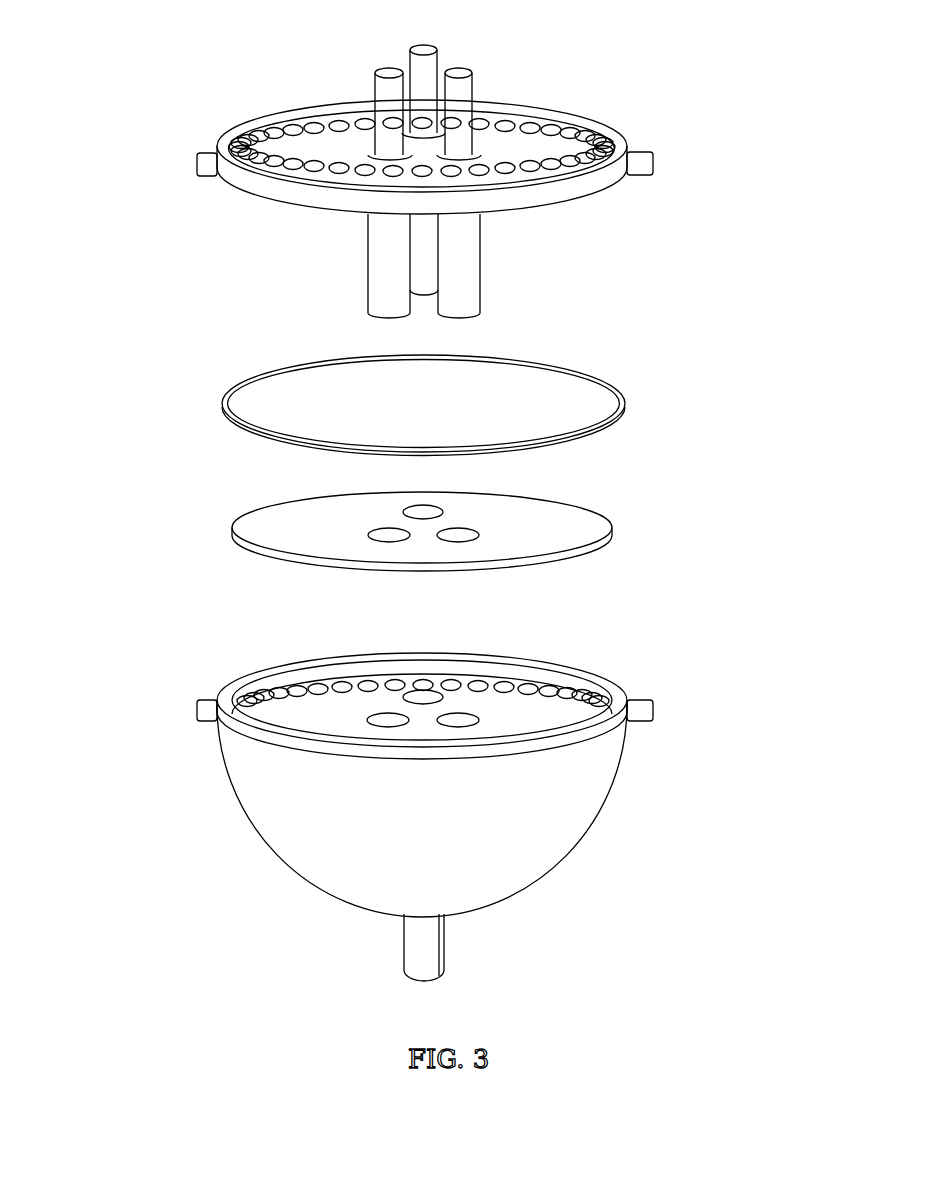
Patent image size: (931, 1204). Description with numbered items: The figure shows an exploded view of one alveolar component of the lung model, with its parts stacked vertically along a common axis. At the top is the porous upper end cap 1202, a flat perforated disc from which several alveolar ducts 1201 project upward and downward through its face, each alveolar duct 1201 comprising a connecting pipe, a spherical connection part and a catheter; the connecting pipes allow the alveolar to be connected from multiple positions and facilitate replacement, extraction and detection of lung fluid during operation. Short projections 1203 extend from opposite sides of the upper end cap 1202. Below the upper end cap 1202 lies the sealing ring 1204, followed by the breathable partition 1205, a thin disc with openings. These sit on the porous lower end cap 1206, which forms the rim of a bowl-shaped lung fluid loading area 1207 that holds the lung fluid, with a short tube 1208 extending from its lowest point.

The alveolar duct 1201 is at (432, 50).
The porous upper end cap 1202 is at (625, 143).
The side lugs 1203 is at (197, 155).
The sealing ring 1204 is at (615, 392).
The breathable partition 1205 is at (598, 512).
The porous lower end cap 1206 is at (626, 693).
The lung fluid loading area 1207 is at (605, 806).
The outlet spout 1208 is at (444, 970).